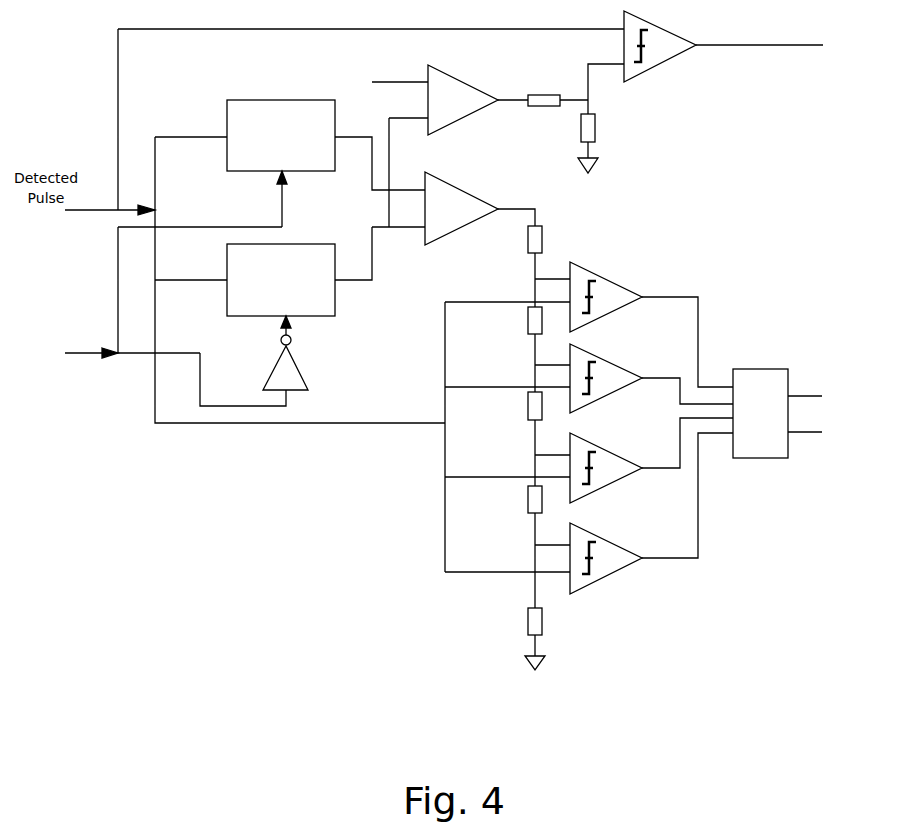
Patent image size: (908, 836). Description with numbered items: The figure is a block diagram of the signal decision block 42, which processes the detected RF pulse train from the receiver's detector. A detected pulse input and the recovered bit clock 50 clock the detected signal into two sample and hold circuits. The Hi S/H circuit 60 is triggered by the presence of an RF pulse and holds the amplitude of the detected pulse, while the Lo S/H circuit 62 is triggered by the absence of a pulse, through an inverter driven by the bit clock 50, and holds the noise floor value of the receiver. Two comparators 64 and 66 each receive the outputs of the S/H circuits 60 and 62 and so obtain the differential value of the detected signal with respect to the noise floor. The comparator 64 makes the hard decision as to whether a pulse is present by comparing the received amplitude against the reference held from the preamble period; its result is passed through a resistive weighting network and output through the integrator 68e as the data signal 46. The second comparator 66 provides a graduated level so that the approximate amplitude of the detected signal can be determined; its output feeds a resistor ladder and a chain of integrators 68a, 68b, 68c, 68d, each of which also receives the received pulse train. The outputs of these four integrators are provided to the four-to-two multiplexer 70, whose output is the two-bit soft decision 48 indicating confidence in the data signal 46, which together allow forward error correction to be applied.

The signal decision block 42 is at (425, 349).
The data signal 46 is at (759, 58).
The two-bit soft decision signal 48 is at (835, 393).
The bit clock 50 is at (114, 333).
The Hi sample and hold circuit 60 is at (281, 135).
The Lo sample and hold circuit 62 is at (281, 280).
The comparator 64 is at (463, 100).
The second comparator 66 is at (461, 208).
The integrator 68a is at (607, 297).
The integrator 68b is at (607, 383).
The integrator 68c is at (607, 470).
The integrator 68d is at (607, 566).
The integrator 68e is at (660, 52).
The 4:2 multiplexer 70 is at (760, 413).